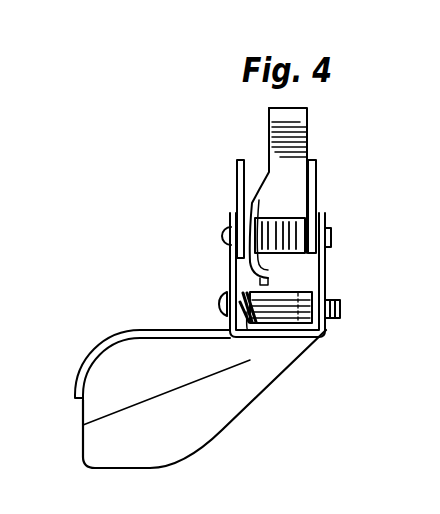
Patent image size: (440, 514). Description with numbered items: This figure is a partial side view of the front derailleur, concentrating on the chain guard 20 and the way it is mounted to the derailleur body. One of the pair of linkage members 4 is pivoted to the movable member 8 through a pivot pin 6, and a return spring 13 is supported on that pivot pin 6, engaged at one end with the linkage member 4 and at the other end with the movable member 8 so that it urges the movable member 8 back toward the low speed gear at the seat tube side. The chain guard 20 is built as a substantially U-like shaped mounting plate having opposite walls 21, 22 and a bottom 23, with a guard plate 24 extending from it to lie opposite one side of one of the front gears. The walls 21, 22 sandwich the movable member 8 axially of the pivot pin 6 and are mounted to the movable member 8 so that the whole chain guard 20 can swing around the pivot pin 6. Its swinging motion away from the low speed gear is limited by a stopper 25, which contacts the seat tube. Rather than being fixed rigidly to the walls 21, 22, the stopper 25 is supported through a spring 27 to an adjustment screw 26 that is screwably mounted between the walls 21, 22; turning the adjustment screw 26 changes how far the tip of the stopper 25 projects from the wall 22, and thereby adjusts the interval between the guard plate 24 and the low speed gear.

The linkage member 4 is at (295, 182).
The movable member 8 is at (236, 187).
The pivot pin 6 is at (222, 235).
The wall 21 is at (235, 275).
The return spring 13 is at (283, 258).
The wall 22 is at (323, 262).
The stopper 25 is at (268, 331).
The bottom 23 is at (265, 328).
The adjustment screw 26 is at (218, 302).
The chain guard 20 is at (138, 328).
The guard plate 24 is at (112, 400).
The spring 27 is at (247, 312).